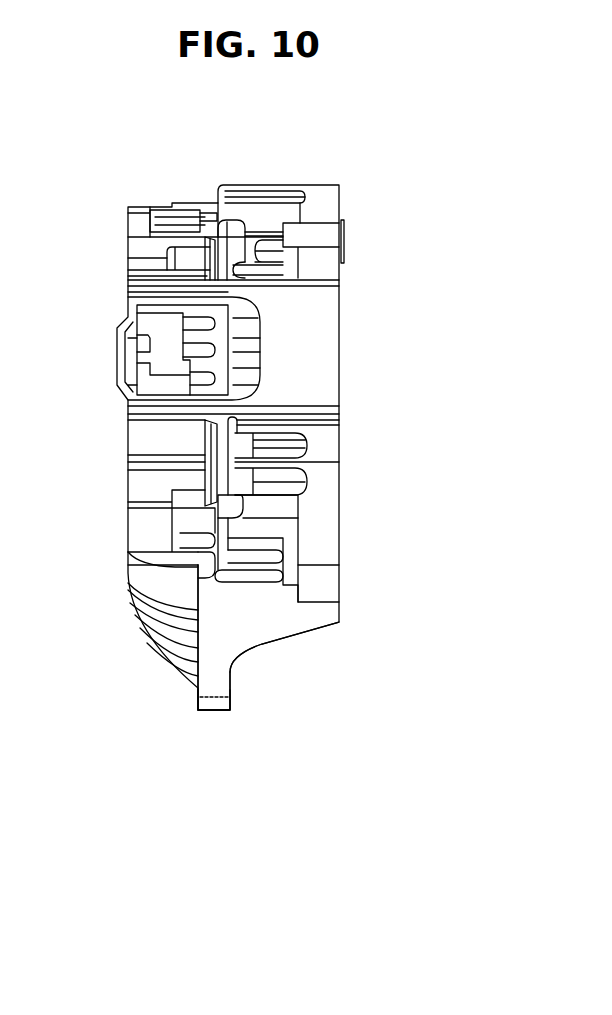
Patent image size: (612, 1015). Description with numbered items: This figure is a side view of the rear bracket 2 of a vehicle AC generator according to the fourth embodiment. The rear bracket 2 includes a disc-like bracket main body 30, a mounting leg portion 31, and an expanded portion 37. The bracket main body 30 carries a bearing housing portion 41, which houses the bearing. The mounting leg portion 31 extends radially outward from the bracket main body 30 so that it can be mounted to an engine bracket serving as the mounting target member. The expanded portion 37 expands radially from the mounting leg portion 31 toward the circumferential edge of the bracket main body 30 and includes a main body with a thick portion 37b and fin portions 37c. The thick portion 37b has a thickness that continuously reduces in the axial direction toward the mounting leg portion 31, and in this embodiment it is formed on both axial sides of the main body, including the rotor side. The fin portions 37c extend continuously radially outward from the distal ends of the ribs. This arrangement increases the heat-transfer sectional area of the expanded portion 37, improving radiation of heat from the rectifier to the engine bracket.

The rear bracket 2 is at (392, 267).
The bracket main body 30 is at (128, 243).
The bearing housing portion 41 is at (130, 413).
The expanded portion 37 is at (225, 658).
The thick portion 37b is at (245, 623).
The fin portion 37c is at (175, 640).
The mounting leg portion 31 is at (213, 705).